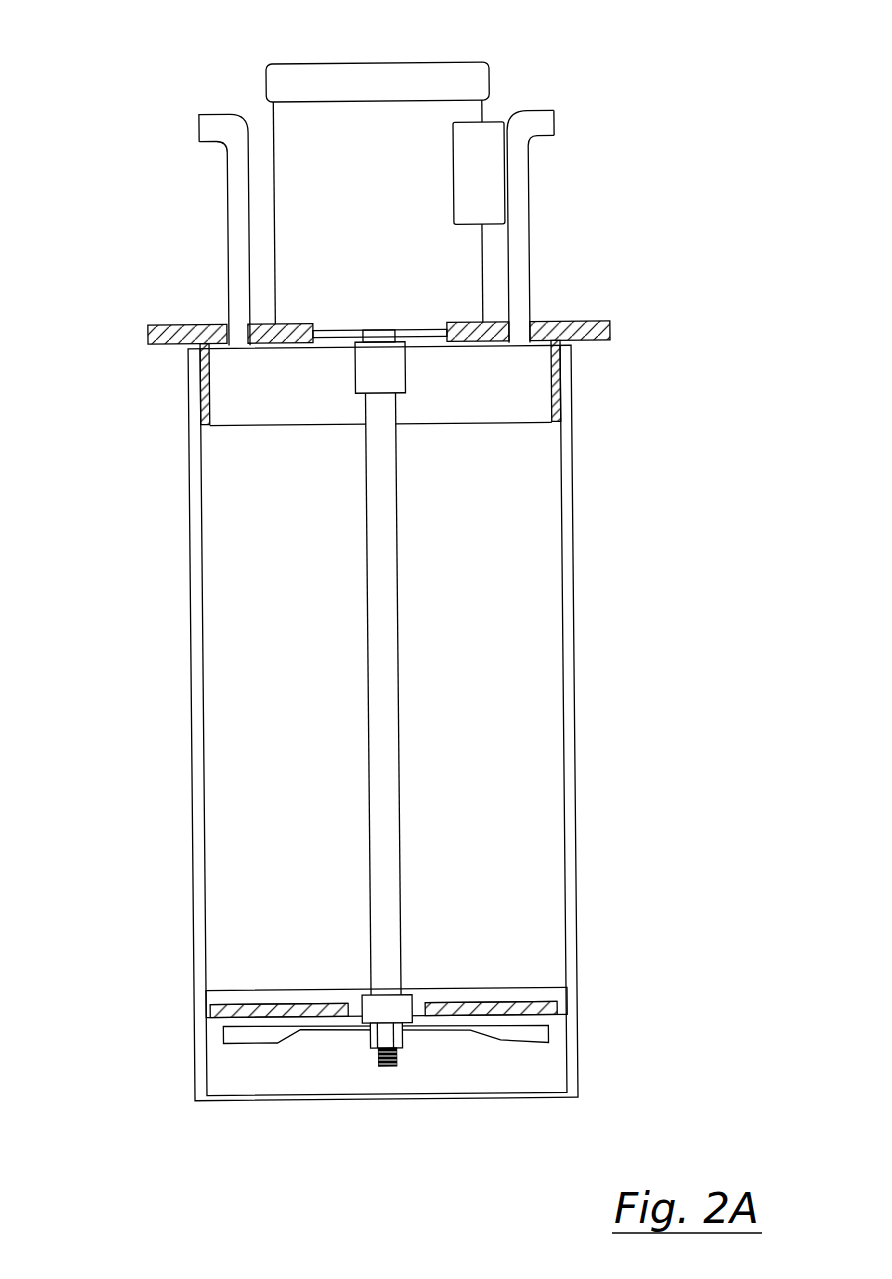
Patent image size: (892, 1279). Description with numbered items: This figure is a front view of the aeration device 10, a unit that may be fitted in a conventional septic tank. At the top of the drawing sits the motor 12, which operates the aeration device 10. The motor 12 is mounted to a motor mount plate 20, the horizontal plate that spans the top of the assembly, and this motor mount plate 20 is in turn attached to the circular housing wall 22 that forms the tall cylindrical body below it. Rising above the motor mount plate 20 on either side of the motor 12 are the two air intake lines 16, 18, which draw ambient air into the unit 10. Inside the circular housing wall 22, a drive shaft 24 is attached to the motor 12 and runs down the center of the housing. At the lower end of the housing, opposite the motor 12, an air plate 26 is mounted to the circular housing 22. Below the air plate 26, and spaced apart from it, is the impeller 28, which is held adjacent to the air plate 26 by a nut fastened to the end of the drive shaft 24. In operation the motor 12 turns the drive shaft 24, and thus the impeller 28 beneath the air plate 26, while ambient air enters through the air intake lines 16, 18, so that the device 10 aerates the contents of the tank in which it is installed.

The aeration device 10 is at (630, 557).
The motor 12 is at (411, 63).
The air intake line 16 is at (550, 117).
The air intake line 18 is at (202, 116).
The motor mount plate 20 is at (153, 321).
The circular housing wall 22 is at (572, 869).
The drive shaft 24 is at (396, 825).
The air plate 26 is at (531, 988).
The impeller 28 is at (544, 1037).